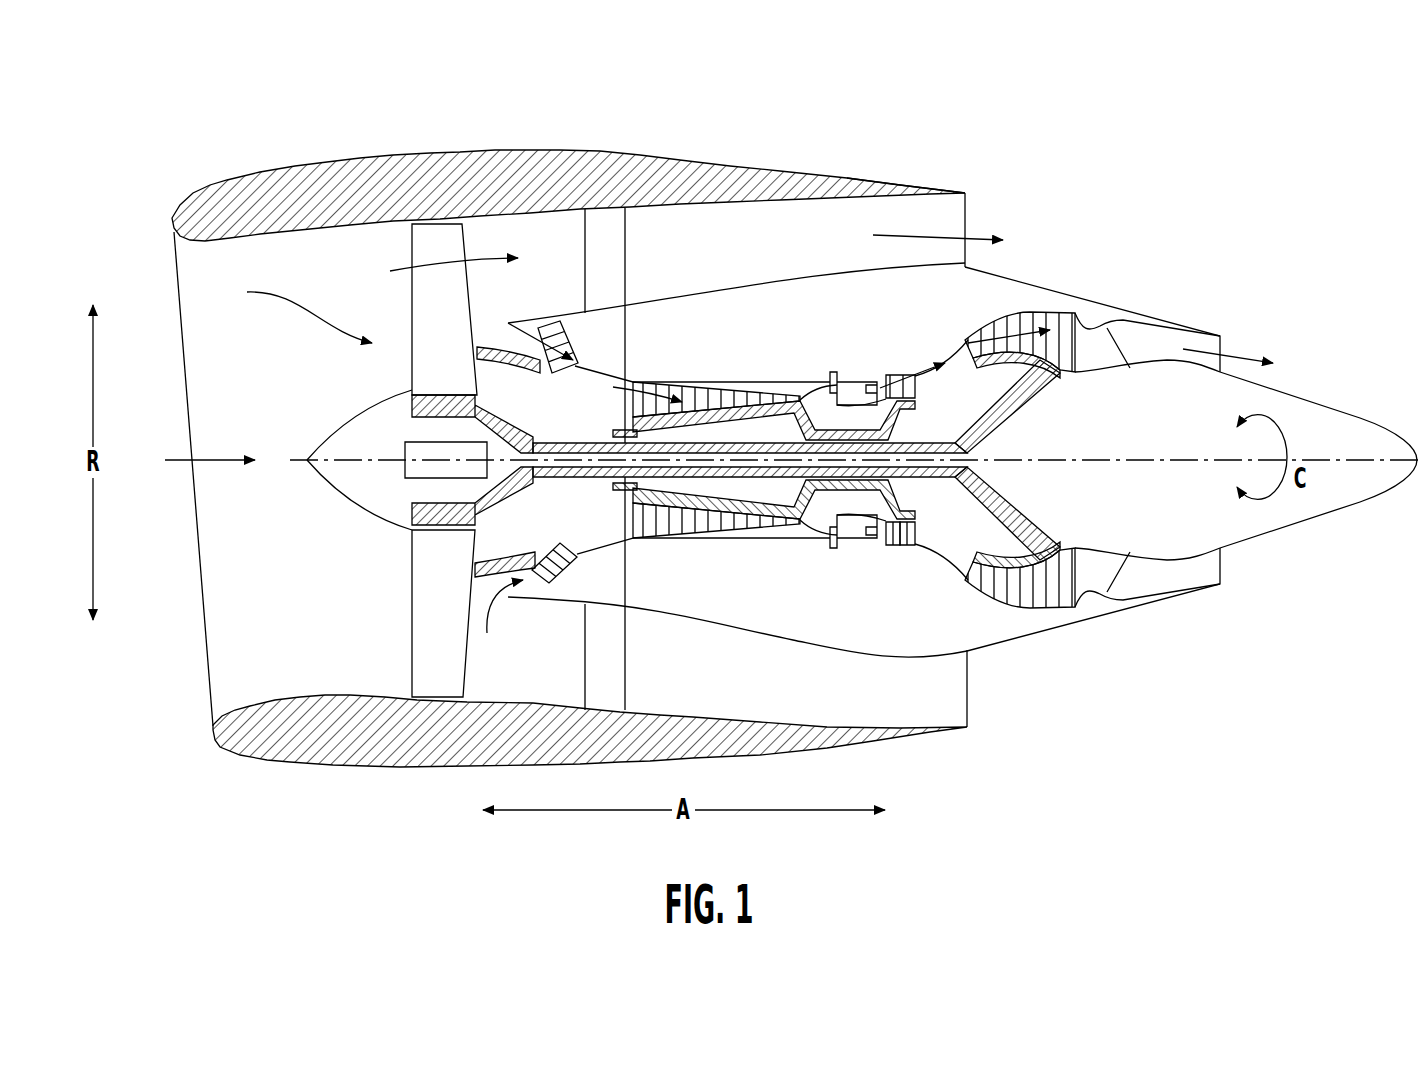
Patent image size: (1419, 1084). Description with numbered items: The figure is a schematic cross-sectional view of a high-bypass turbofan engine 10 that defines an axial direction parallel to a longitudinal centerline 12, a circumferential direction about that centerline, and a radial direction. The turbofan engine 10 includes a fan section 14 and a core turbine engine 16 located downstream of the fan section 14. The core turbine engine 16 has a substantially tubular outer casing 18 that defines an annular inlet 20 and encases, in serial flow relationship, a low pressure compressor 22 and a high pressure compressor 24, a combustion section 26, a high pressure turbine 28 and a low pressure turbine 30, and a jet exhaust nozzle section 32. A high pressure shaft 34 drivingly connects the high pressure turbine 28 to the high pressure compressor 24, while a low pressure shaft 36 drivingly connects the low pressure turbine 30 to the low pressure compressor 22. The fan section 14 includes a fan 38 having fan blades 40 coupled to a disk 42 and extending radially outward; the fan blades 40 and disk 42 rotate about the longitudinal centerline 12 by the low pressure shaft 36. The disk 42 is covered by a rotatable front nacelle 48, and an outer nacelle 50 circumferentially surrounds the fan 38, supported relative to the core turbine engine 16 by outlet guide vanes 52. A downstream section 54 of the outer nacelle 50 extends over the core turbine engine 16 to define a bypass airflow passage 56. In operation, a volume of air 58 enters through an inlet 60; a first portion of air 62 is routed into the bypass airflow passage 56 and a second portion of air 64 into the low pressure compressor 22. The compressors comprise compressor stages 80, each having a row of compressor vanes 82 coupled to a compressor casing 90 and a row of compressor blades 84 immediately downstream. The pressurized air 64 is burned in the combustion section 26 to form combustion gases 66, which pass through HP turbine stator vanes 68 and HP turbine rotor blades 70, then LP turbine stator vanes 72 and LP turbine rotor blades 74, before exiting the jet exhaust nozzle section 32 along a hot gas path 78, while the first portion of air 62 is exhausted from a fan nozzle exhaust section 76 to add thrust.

The turbofan engine 10 is at (1125, 162).
The longitudinal centerline 12 is at (1137, 460).
The fan section 14 is at (492, 137).
The core turbine engine 16 is at (760, 328).
The outer casing 18 is at (803, 647).
The annular inlet 20 is at (500, 620).
The low pressure compressor 22 is at (588, 555).
The high pressure compressor 24 is at (660, 537).
The combustion section 26 is at (850, 540).
The high pressure turbine 28 is at (925, 537).
The low pressure turbine 30 is at (1060, 612).
The jet exhaust nozzle section 32 is at (1222, 337).
The high pressure shaft 34 is at (860, 428).
The low pressure shaft 36 is at (583, 440).
The fan 38 is at (291, 311).
The fan blades 40 is at (412, 628).
The disk 42 is at (437, 407).
The front nacelle 48 is at (320, 440).
The outer nacelle 50 is at (458, 768).
The outlet guide vanes 52 is at (625, 252).
The downstream section 54 is at (905, 183).
The bypass airflow passage 56 is at (799, 253).
The volume of air 58 is at (213, 460).
The inlet 60 is at (216, 713).
The first portion of air 62 is at (433, 268).
The second portion of air 64 is at (495, 343).
The combustion gases 66 is at (897, 376).
The HP turbine stator vanes 68 is at (888, 546).
The HP turbine rotor blades 70 is at (905, 546).
The LP turbine stator vanes 72 is at (970, 587).
The LP turbine rotor blades 74 is at (983, 593).
The fan nozzle exhaust section 76 is at (953, 222).
The hot gas path 78 is at (947, 352).
The compressor stages 80 is at (551, 328).
The compressor vanes 82 is at (545, 585).
The compressor blades 84 is at (574, 560).
The compressor casing 90 is at (710, 379).